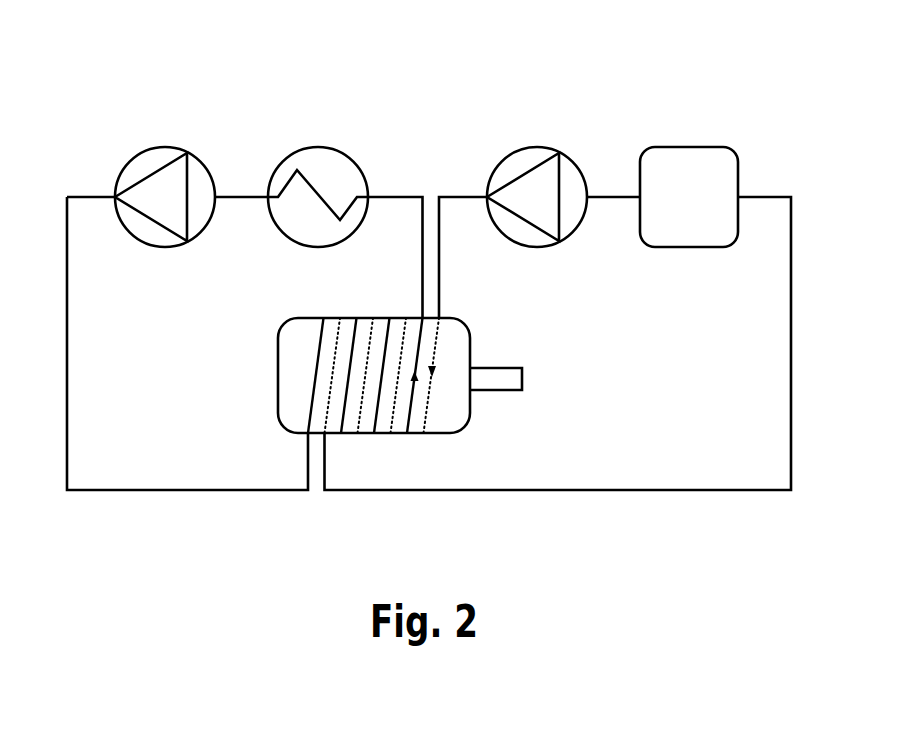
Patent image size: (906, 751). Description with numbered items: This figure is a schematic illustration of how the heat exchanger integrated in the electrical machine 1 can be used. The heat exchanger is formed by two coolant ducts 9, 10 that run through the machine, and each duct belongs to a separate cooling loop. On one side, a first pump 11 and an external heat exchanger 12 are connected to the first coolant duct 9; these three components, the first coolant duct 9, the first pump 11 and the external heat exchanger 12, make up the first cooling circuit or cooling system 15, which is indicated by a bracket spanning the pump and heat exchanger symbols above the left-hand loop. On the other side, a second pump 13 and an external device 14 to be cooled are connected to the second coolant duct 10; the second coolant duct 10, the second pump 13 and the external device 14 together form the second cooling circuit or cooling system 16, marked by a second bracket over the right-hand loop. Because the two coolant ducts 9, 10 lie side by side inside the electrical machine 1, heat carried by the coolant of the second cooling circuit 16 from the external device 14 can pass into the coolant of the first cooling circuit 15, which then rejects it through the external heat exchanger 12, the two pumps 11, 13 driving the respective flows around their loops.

The electric motor 1 is at (297, 370).
The first coolant duct 9 is at (408, 408).
The second coolant duct 10 is at (433, 352).
The first pump 11 is at (142, 165).
The external heat exchanger 12 is at (318, 165).
The second pump 13 is at (567, 173).
The external device to be cooled 14 is at (723, 162).
The first cooling circuit 15 is at (67, 82).
The second cooling circuit 16 is at (437, 82).